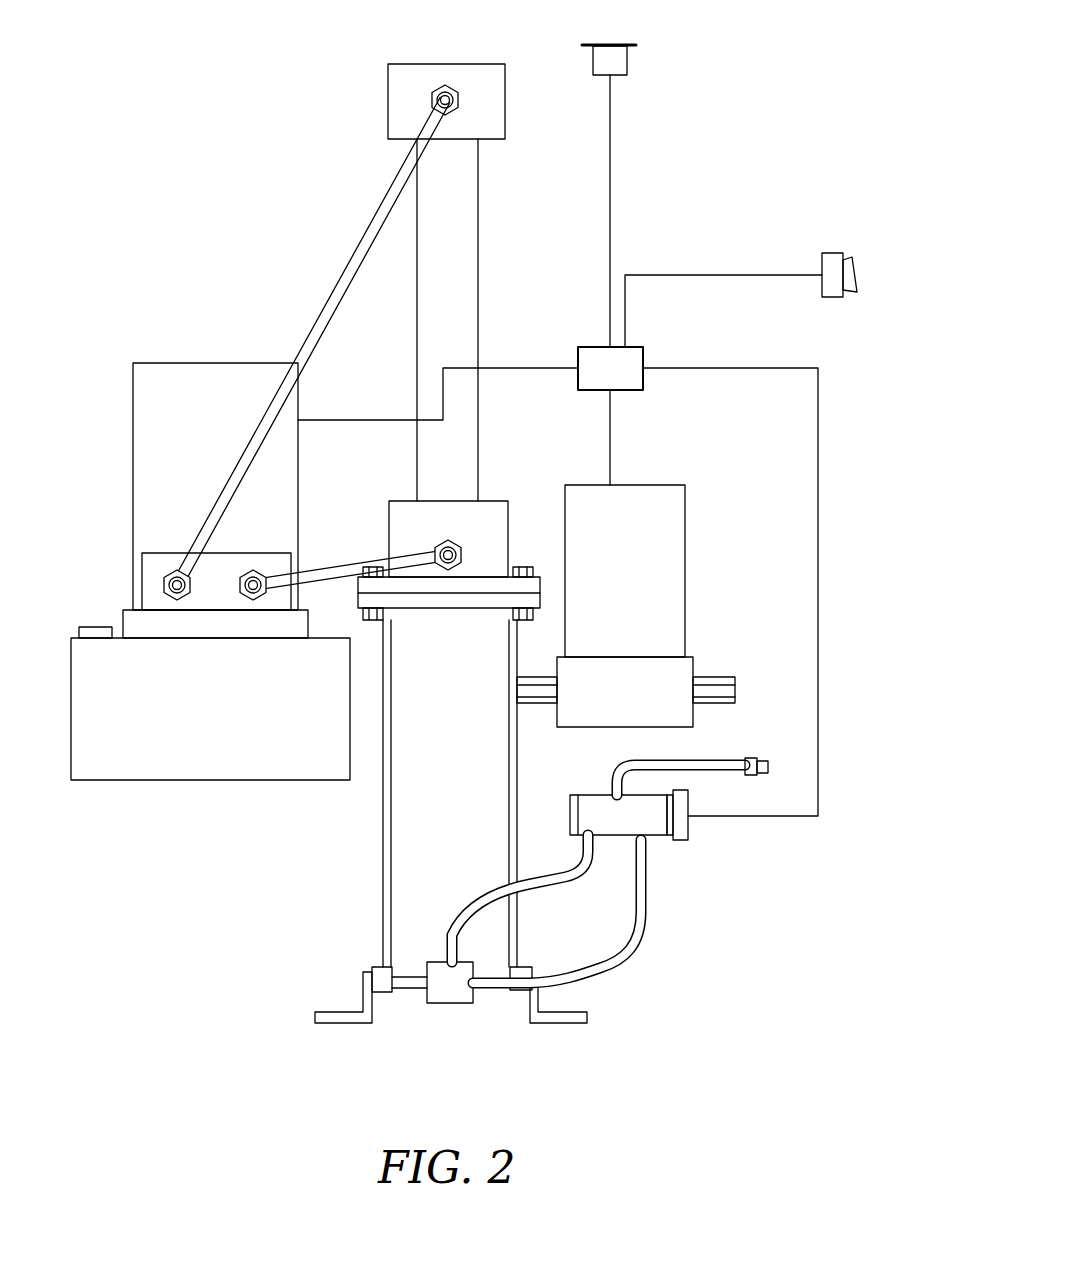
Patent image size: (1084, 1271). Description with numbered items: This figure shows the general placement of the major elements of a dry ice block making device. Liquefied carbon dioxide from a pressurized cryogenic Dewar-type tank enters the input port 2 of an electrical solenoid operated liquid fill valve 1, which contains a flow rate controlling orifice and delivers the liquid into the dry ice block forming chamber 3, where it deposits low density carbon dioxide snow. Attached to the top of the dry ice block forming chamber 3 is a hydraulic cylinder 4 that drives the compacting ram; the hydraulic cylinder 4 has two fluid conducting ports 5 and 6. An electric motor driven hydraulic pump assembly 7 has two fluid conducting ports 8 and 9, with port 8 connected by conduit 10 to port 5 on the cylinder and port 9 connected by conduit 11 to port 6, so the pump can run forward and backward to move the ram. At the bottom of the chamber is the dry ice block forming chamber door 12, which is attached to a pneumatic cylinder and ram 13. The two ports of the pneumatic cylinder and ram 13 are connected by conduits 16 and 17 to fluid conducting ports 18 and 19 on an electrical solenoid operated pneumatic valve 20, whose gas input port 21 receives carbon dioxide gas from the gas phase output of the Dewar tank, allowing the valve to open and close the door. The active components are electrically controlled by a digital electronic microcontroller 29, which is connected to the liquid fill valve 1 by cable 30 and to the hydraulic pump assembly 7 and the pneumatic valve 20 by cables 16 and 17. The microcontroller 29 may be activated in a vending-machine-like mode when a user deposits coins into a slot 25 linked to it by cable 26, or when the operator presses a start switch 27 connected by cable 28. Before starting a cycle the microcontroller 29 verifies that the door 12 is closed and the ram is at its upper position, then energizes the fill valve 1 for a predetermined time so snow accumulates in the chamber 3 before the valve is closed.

The electrical solenoid operated liquid fill valve 1 is at (645, 545).
The input port 2 is at (713, 680).
The dry ice block forming chamber 3 is at (437, 810).
The hydraulic cylinder 4 is at (450, 265).
The fluid conducting port 5 is at (455, 80).
The fluid conducting port 6 is at (458, 522).
The hydraulic pump assembly 7 is at (156, 718).
The fluid conducting port 8 is at (168, 580).
The fluid conducting port 9 is at (256, 566).
The conduit 10 is at (362, 243).
The conduit 11 is at (318, 570).
The dry ice block forming chamber door 12 is at (410, 990).
The pneumatic cylinder and ram 13 is at (452, 1003).
The conduit 16 is at (515, 360).
The conduit 17 is at (820, 570).
The fluid conducting port 18 is at (547, 880).
The fluid conducting port 19 is at (632, 952).
The electrical solenoid operated pneumatic valve 20 is at (690, 838).
The gas input port 21 is at (732, 768).
The slot 25 is at (630, 60).
The cable 26 is at (612, 175).
The start switch 27 is at (847, 273).
The cable 28 is at (700, 275).
The digital electronic microcontroller 29 is at (608, 372).
The cable 30 is at (615, 446).